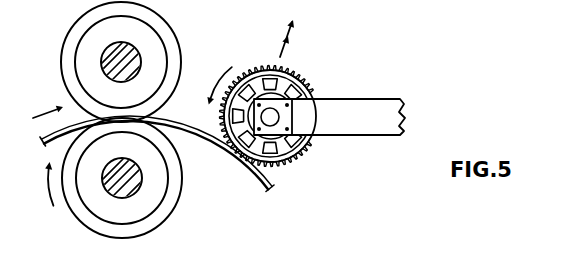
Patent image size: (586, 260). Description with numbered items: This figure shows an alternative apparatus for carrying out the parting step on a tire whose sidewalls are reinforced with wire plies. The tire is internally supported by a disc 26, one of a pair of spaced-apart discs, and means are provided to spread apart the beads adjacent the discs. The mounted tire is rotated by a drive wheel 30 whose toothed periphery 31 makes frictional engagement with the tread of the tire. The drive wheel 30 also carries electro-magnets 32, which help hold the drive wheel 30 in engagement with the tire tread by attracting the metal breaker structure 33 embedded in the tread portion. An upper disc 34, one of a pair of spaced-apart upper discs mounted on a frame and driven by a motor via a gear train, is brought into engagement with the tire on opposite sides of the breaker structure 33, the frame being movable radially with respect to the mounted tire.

The disc 26 is at (160, 182).
The upper disc 34 is at (148, 38).
The drive wheel 30 is at (306, 108).
The toothed periphery 31 is at (300, 73).
The electro-magnets 32 is at (300, 160).
The metal breaker structure 33 is at (261, 190).